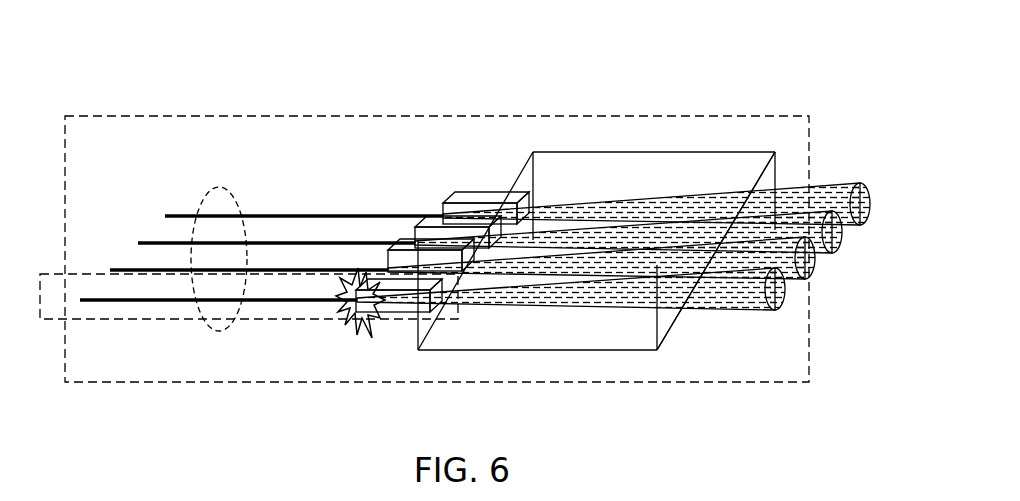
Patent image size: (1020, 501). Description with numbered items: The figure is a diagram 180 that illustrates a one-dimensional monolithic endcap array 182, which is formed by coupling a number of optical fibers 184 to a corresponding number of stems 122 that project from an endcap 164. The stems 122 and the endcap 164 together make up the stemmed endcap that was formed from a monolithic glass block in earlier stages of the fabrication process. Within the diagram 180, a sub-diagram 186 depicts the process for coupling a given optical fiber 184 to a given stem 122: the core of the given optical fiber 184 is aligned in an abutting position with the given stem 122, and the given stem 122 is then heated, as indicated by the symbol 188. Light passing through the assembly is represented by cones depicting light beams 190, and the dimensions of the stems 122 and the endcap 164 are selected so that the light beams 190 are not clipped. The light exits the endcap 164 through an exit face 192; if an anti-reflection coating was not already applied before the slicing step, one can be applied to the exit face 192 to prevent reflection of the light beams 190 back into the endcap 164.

The diagram 180 is at (90, 46).
The monolithic endcap array 182 is at (64, 243).
The optical fibers 184 is at (202, 200).
The sub-diagram 186 is at (115, 320).
The symbol 188 is at (352, 342).
The stems 122 is at (390, 249).
The endcap 164 is at (553, 338).
The light beams 190 is at (864, 225).
The exit face 192 is at (665, 322).